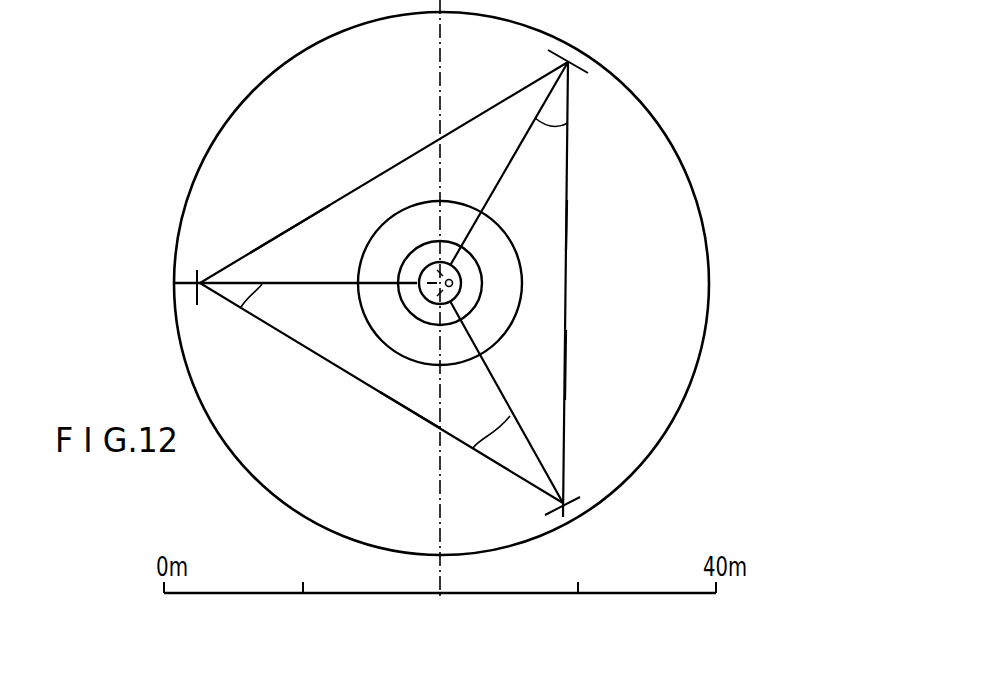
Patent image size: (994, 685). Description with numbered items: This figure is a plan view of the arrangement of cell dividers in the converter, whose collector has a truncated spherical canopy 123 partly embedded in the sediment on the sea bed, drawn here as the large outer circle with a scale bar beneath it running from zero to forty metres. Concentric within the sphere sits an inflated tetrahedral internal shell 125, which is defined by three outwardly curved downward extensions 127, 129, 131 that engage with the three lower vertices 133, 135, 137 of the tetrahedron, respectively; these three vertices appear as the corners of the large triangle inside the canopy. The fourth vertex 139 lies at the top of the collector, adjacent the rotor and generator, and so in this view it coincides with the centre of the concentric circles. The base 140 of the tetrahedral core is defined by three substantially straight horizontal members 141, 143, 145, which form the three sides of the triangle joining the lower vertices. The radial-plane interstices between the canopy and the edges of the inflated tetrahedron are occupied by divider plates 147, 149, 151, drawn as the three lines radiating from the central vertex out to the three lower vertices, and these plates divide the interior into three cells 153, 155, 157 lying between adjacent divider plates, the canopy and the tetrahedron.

The truncated spherical canopy 123 is at (677, 420).
The inflated tetrahedral internal shell 125 is at (548, 197).
The downward extension 127 is at (568, 123).
The downward extension 129 is at (241, 307).
The downward extension 131 is at (473, 448).
The lower vertex 133 is at (577, 60).
The lower vertex 135 is at (196, 263).
The lower vertex 137 is at (570, 498).
The fourth vertex 139 is at (452, 283).
The base 140 is at (537, 322).
The horizontal member 141 is at (565, 377).
The horizontal member 143 is at (378, 392).
The horizontal member 145 is at (375, 177).
The divider plate 147 is at (507, 168).
The divider plate 149 is at (535, 456).
The divider plate 151 is at (312, 284).
The cell 153 is at (542, 227).
The cell 155 is at (427, 400).
The cell 157 is at (313, 235).